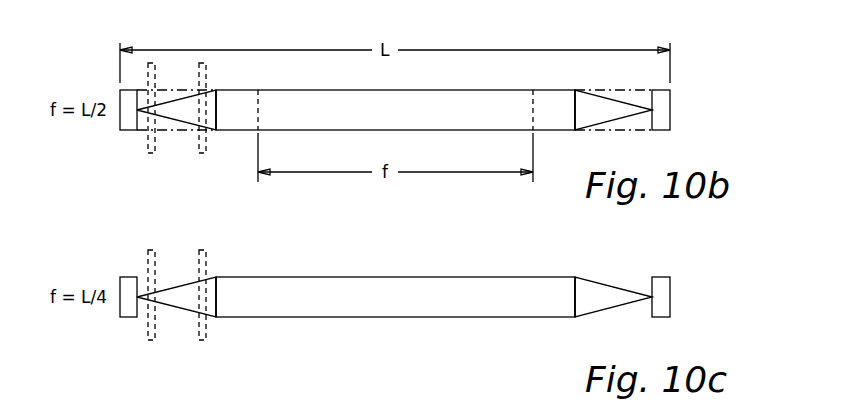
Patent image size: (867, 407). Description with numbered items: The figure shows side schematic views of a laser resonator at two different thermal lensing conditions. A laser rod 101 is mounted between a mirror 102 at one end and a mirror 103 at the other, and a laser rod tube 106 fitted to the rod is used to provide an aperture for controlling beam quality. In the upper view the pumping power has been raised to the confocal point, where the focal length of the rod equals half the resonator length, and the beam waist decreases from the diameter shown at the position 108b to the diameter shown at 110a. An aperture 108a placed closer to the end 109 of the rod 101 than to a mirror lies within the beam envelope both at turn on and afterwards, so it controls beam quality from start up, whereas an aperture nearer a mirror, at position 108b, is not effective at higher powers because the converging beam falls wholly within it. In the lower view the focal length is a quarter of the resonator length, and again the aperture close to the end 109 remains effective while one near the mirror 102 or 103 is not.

In FIG. 10B, the laser rod 101 is at (467, 90).
In FIG. 10C, the laser rod 101 is at (467, 276).
In FIG. 10B, the mirror 102 is at (120, 125).
In FIG. 10C, the mirror 102 is at (120, 312).
In FIG. 10B, the mirror 103 is at (672, 116).
In FIG. 10C, the mirror 103 is at (672, 297).
In FIG. 10B, the laser rod tube 106 is at (632, 90).
In FIG. 10B, the aperture 108a is at (202, 60).
In FIG. 10C, the aperture 108a is at (202, 247).
In FIG. 10B, the aperture position 108b is at (148, 60).
In FIG. 10C, the aperture position 108b is at (148, 247).
In FIG. 10B, the end of the rod 109 is at (218, 112).
In FIG. 10C, the end of the rod 109 is at (218, 298).
In FIG. 10B, the waist diameter 110a is at (640, 97).